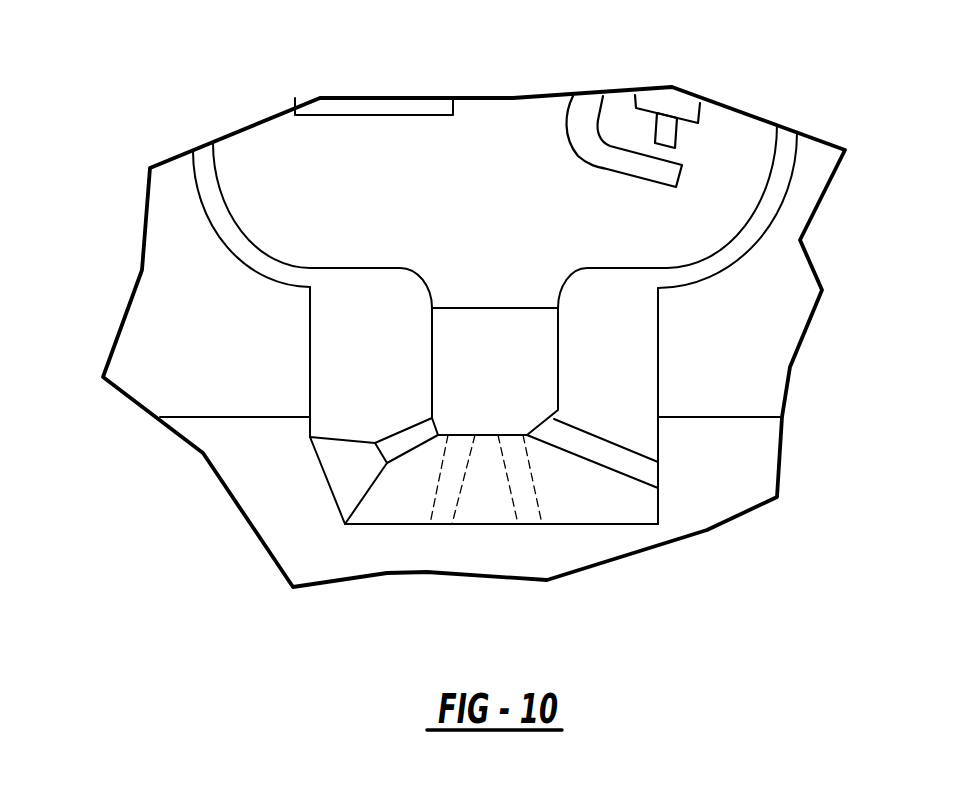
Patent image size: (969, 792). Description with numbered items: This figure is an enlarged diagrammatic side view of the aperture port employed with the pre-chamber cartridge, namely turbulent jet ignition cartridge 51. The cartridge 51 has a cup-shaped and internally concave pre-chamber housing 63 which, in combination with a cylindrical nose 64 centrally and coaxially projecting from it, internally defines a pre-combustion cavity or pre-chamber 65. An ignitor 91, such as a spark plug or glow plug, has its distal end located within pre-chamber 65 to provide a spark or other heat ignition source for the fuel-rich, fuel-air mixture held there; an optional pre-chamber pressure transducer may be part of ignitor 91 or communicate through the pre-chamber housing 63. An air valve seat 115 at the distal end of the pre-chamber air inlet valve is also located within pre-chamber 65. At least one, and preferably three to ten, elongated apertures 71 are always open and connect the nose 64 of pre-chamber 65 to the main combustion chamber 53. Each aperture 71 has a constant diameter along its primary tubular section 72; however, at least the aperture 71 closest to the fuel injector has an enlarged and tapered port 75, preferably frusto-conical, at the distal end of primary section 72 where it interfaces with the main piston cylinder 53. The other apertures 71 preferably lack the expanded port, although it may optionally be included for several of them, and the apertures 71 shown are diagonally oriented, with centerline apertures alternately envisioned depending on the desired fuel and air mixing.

The turbulent jet ignition cartridge 51 is at (161, 481).
The main combustion chamber 53 is at (746, 458).
The pre-chamber housing 63 is at (210, 208).
The cylindrical nose 64 is at (432, 368).
The pre-combustion cavity 65 is at (512, 208).
The elongated apertures 71 is at (398, 462).
The primary tubular section 72 is at (403, 437).
The enlarged and tapered port 75 is at (347, 470).
The ignitor 91 is at (678, 100).
The air valve seat 115 is at (388, 107).